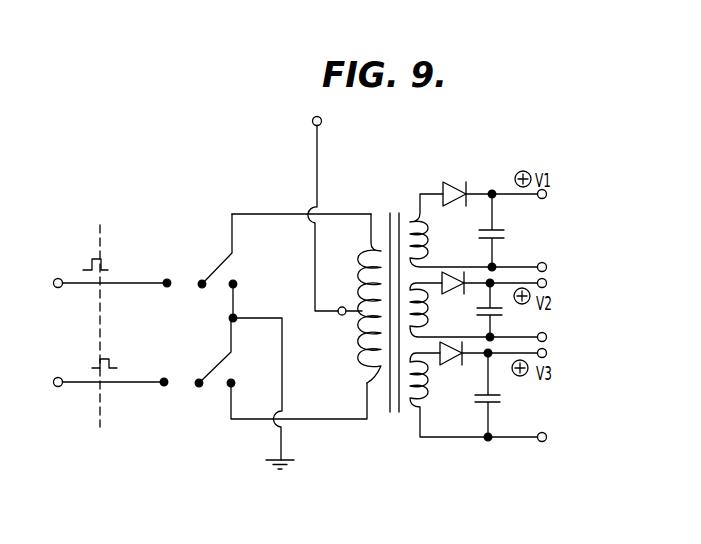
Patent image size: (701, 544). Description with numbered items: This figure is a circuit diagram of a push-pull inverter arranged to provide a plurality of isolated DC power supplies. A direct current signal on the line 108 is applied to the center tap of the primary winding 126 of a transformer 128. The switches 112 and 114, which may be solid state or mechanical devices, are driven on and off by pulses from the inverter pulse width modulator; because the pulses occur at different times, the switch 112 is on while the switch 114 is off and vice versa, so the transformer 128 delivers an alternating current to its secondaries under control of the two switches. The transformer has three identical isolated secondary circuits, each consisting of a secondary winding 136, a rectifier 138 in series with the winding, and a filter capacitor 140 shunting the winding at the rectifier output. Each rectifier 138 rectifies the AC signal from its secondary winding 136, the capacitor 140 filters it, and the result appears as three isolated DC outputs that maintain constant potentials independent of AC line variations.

The line 108 is at (318, 152).
The switch 112 is at (217, 270).
The switch 114 is at (215, 367).
The primary winding 126 is at (363, 327).
The transformer 128 is at (393, 210).
The secondary winding 136 is at (418, 230).
The rectifier 138 is at (460, 182).
The filter capacitor 140 is at (504, 230).